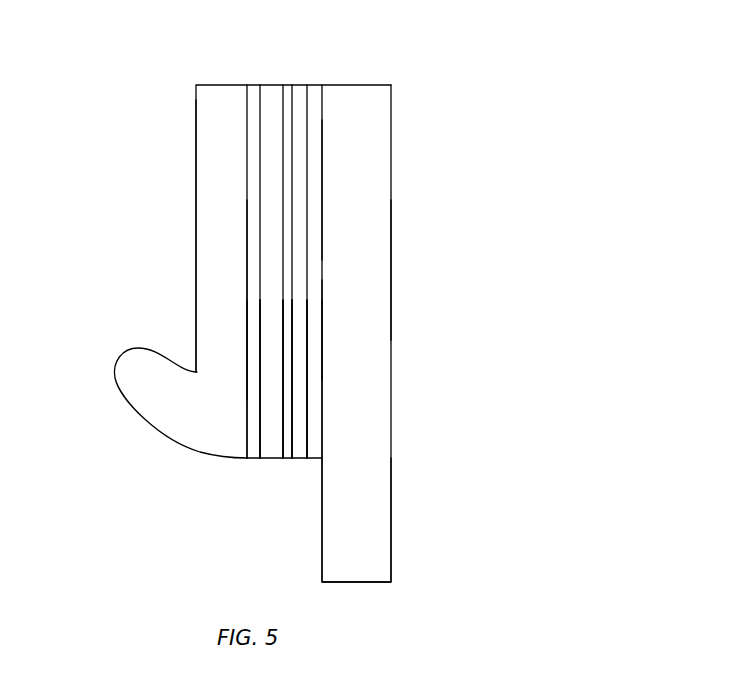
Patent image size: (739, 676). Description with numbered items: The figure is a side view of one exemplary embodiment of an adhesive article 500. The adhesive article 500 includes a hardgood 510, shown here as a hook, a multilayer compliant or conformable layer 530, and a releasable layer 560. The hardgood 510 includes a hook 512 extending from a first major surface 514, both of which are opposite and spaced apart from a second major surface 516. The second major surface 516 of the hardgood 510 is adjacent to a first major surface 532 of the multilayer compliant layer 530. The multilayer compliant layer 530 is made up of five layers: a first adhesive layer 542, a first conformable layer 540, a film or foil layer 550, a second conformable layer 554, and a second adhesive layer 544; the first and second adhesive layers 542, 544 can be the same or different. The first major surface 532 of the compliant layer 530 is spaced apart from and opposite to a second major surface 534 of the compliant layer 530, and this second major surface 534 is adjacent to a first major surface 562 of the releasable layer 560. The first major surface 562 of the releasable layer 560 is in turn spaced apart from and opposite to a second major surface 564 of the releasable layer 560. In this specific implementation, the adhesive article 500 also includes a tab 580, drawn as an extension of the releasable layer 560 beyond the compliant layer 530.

The adhesive article 500 is at (520, 188).
The hardgood 510 is at (208, 116).
The hook 512 is at (133, 383).
The first major surface 514 is at (196, 227).
The second major surface 516 is at (247, 168).
The multilayer compliant or conformable layer 530 is at (322, 73).
The first major surface 532 is at (247, 293).
The second major surface 534 is at (322, 326).
The first conformable layer 540 is at (271, 451).
The first adhesive layer 542 is at (253, 451).
The second adhesive layer 544 is at (316, 451).
The film or foil layer 550 is at (287, 451).
The second conformable layer 554 is at (300, 451).
The releasable layer 560 is at (368, 100).
The first major surface 562 is at (322, 186).
The second major surface 564 is at (390, 268).
The tab 580 is at (377, 500).